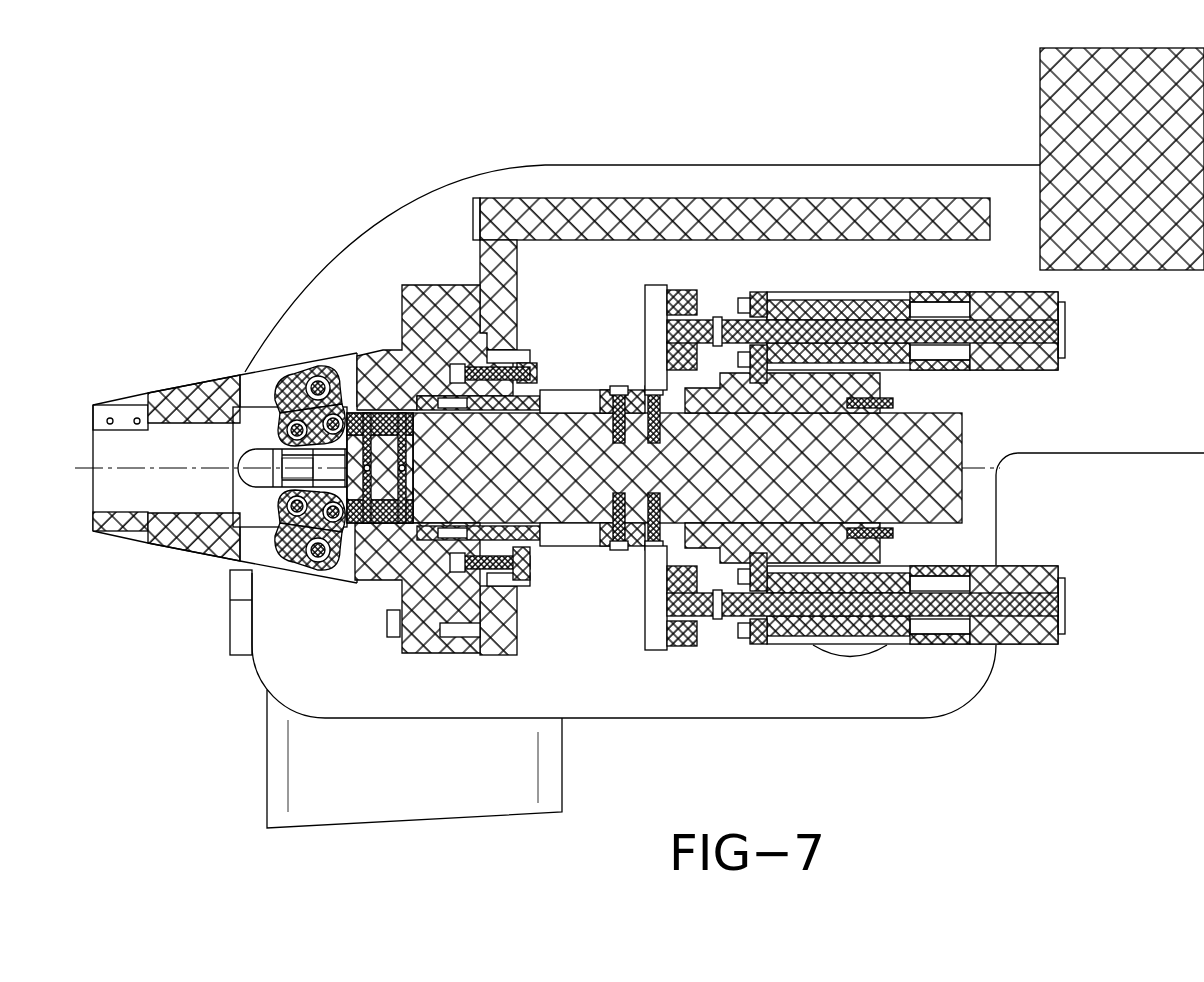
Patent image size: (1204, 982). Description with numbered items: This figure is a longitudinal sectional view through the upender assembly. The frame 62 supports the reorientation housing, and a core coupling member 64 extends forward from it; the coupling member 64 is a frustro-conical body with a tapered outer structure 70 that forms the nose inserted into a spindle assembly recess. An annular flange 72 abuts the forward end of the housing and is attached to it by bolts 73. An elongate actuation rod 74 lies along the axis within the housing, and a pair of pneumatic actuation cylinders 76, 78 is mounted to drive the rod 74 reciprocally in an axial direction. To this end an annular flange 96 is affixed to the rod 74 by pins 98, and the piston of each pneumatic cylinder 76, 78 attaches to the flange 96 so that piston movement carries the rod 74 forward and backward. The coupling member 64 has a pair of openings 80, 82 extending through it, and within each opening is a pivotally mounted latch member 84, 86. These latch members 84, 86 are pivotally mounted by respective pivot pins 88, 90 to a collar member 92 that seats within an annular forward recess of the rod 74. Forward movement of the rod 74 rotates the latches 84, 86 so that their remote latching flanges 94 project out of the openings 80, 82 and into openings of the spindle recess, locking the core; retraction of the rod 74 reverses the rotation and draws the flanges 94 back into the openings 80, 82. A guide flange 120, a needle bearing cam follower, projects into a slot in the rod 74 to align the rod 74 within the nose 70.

The frame 62 is at (671, 212).
The core coupling member 64 is at (183, 378).
The tapered outer structure 70 is at (117, 540).
The annular flange 72 is at (438, 600).
The bolts 73 is at (522, 580).
The elongate actuation rod 74 is at (935, 443).
The pneumatic actuation cylinder 76 is at (803, 330).
The pneumatic actuation cylinder 78 is at (806, 604).
The opening 80 is at (242, 370).
The opening 82 is at (255, 565).
The latch member 84 is at (300, 388).
The latch member 86 is at (295, 552).
The pivot pin 88 is at (319, 383).
The pivot pin 90 is at (320, 553).
The collar member 92 is at (385, 413).
The latching flanges 94 is at (257, 378).
The annular flange 96 is at (644, 388).
The pins 98 is at (638, 387).
The guide flange 120 is at (292, 476).